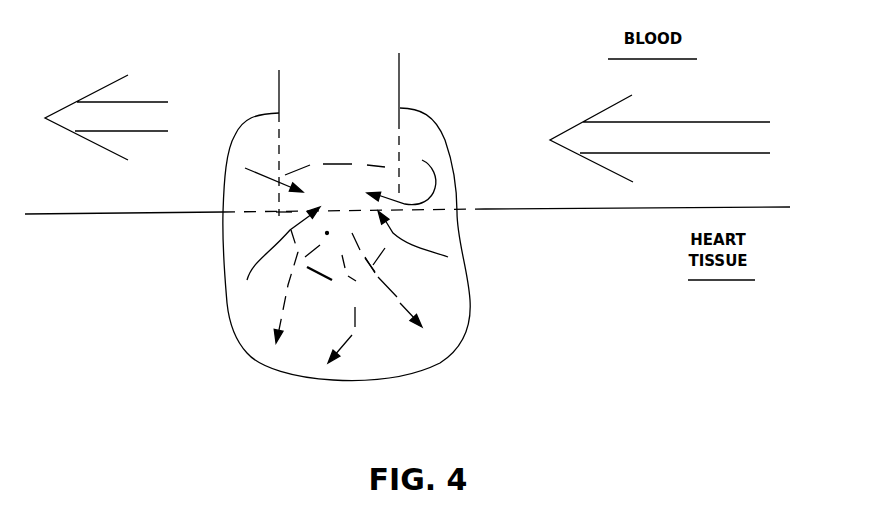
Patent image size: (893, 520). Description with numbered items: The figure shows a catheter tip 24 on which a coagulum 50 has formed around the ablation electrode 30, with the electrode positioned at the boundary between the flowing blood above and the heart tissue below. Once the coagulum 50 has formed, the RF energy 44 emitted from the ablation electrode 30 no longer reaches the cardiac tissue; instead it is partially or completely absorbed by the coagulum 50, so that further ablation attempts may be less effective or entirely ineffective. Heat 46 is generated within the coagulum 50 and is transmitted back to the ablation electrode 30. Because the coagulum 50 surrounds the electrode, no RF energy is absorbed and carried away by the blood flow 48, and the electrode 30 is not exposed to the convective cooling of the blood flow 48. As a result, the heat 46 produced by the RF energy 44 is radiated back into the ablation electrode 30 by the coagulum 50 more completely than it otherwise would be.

The catheter tip 24 is at (373, 90).
The ablation electrode 30 is at (367, 185).
The RF energy 44 is at (355, 308).
The heat 46 is at (424, 259).
The blood flow 48 is at (717, 137).
The coagulum 50 is at (245, 240).